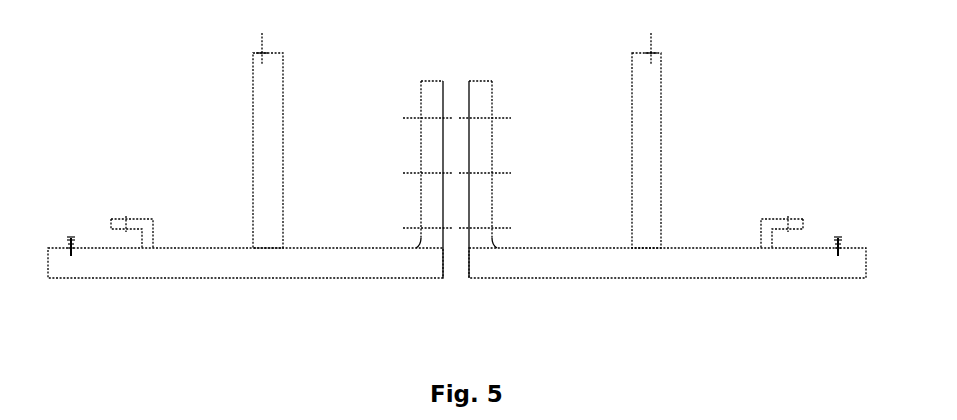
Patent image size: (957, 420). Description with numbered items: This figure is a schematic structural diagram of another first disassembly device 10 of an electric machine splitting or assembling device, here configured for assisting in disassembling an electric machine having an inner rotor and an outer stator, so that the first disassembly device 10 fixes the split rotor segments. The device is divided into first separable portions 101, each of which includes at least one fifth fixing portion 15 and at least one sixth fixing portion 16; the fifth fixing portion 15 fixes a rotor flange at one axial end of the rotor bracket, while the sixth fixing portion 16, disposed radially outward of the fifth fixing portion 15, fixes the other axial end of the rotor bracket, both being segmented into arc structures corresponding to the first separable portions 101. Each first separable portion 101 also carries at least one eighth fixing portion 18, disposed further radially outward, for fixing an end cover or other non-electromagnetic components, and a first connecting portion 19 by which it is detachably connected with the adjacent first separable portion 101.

The first disassembly device 10 is at (464, 48).
The first separable portion 101 is at (298, 295).
The fifth fixing portion 15 is at (265, 124).
The sixth fixing portion 16 is at (140, 225).
The eighth fixing portion 18 is at (70, 237).
The first connecting portion 19 is at (424, 159).